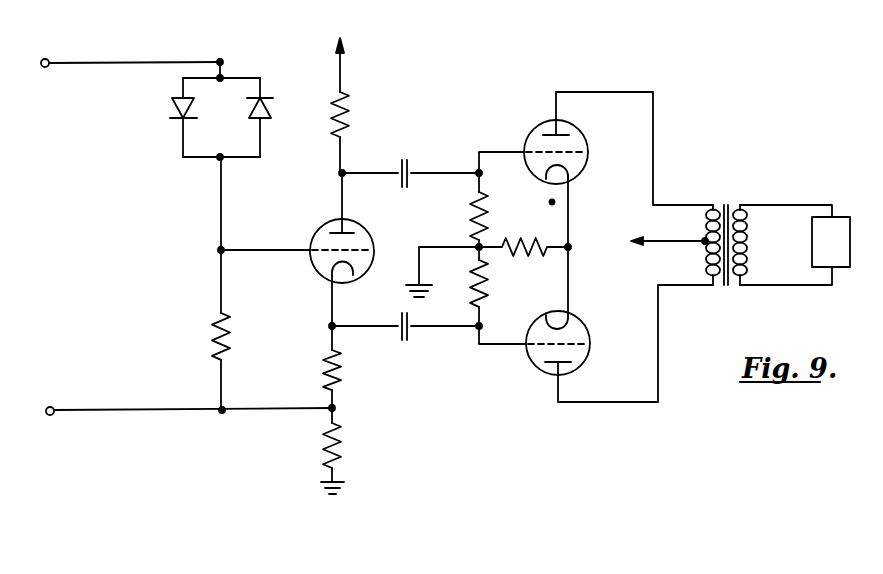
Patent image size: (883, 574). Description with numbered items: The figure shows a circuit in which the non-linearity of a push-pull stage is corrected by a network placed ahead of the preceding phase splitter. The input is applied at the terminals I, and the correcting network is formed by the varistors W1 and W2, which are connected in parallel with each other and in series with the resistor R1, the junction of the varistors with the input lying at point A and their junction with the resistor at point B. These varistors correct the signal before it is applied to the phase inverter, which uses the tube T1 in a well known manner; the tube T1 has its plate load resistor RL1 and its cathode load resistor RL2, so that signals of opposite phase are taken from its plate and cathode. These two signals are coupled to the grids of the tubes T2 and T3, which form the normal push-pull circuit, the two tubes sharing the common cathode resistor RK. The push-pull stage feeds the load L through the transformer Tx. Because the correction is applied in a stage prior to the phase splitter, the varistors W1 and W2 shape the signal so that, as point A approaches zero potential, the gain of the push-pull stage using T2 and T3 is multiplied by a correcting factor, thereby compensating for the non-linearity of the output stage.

The input terminals I is at (43, 61).
The point A is at (222, 60).
The node B is at (217, 251).
The varistor W1 is at (194, 106).
The varistor W2 is at (269, 108).
The resistor R1 is at (229, 330).
The load resistor RL1 is at (346, 109).
The load resistor RL2 is at (350, 365).
The cathode resistor RK is at (510, 255).
The tube T1 is at (320, 224).
The tube T2 is at (568, 128).
The tube T3 is at (575, 324).
The transformer Tx is at (720, 206).
The load L is at (795, 245).